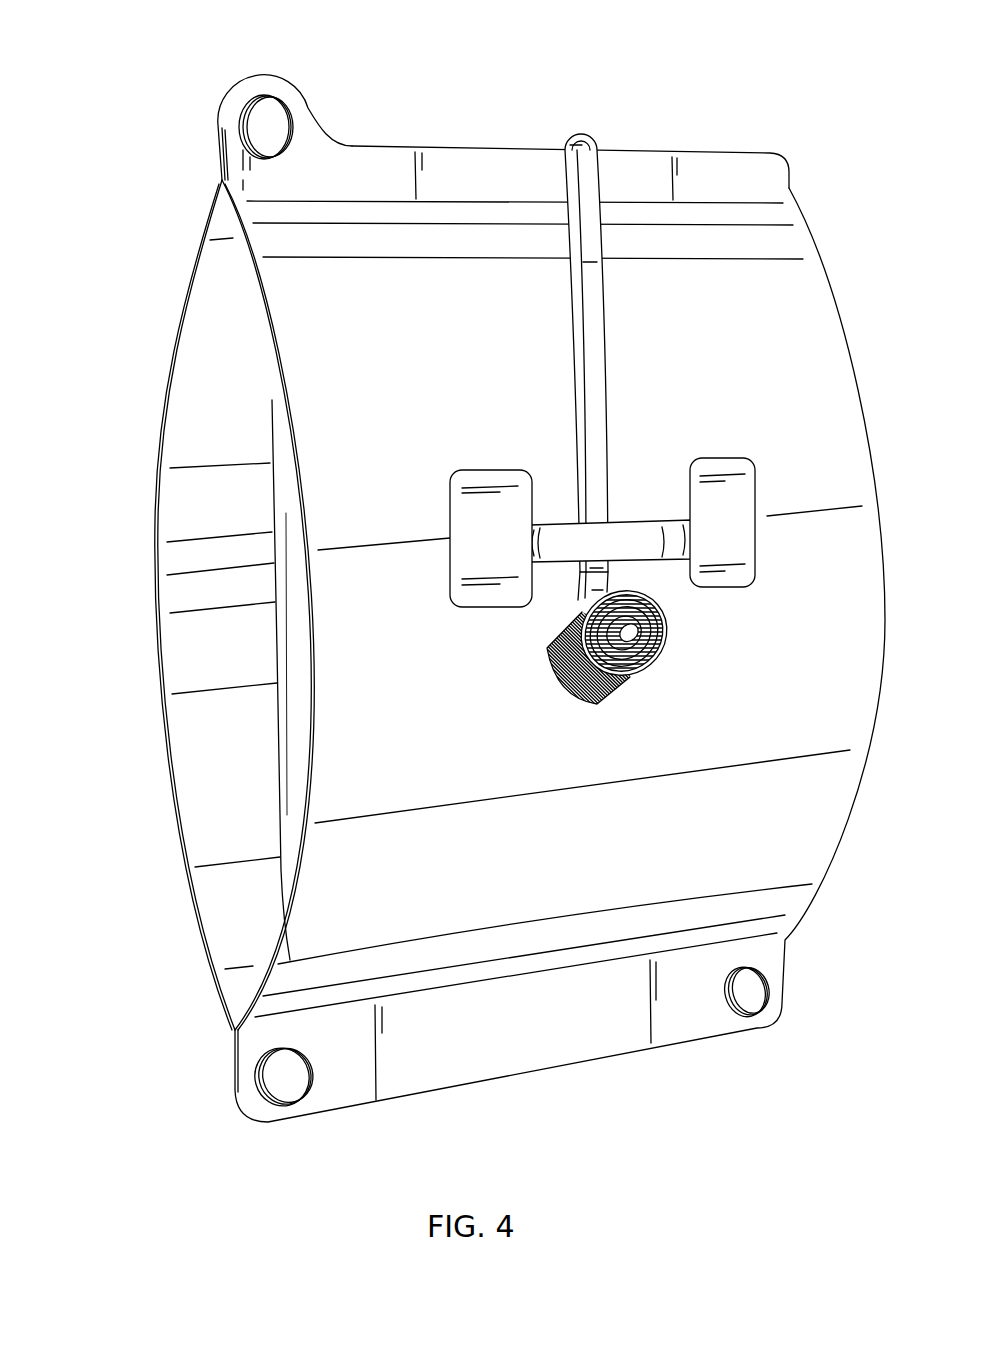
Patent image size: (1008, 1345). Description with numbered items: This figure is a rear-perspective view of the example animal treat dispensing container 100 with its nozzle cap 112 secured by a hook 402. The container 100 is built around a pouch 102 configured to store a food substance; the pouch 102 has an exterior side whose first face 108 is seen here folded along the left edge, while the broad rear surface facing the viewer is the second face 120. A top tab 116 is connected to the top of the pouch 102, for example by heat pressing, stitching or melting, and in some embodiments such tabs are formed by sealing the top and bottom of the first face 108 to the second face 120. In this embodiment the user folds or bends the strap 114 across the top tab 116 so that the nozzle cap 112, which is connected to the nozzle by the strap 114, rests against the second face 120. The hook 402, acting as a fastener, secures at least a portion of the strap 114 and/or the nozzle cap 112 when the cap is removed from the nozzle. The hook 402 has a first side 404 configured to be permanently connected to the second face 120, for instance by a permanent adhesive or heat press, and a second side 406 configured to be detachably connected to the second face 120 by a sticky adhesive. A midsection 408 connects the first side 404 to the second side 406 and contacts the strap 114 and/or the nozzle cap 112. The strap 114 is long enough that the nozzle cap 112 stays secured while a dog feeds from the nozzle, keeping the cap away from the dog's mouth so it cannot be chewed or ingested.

The animal treat dispensing container 100 is at (145, 42).
The pouch 102 is at (87, 302).
The first face 108 is at (168, 773).
The nozzle cap 112 is at (552, 682).
The strap 114 is at (577, 300).
The top tab 116 is at (745, 148).
The second face 120 is at (554, 609).
The hook 402 is at (437, 448).
The first side 404 is at (452, 565).
The second side 406 is at (720, 462).
The midsection 408 is at (608, 538).